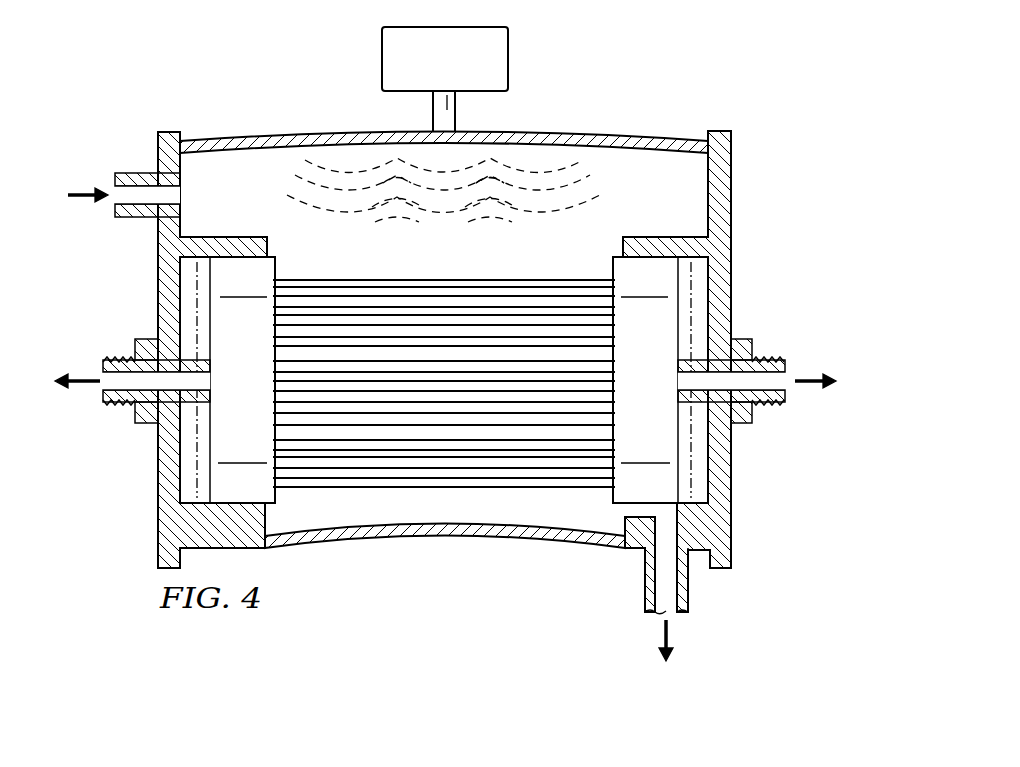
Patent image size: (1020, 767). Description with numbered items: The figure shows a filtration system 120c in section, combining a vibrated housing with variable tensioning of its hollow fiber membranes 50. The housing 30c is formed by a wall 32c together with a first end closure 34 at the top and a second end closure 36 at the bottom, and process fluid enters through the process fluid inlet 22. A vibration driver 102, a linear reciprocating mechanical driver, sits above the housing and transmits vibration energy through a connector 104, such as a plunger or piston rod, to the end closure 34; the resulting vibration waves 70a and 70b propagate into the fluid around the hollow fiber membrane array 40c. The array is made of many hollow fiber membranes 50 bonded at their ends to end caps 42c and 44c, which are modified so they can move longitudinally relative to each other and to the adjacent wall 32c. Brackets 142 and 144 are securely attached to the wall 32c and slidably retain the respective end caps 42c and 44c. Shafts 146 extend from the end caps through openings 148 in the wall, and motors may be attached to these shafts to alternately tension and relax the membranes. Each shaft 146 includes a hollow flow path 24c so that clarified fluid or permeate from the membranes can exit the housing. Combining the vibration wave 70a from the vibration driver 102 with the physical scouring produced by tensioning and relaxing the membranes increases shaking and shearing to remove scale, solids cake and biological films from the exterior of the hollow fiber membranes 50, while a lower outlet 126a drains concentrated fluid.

The filtration system 120c is at (438, 316).
The vibration driver 102 is at (382, 57).
The connector 104 is at (433, 116).
The first end closure 34 is at (298, 137).
The process fluid inlet 22 is at (150, 175).
The bracket 142 is at (230, 238).
The bracket 144 is at (660, 238).
The hollow fiber membrane array 40c is at (319, 271).
The vibration wave 70b is at (397, 224).
The vibration wave 70a is at (536, 224).
The wall 32c is at (734, 208).
The housing 30c is at (158, 487).
The opening 148 is at (208, 357).
The shaft 146 is at (208, 404).
The hollow flow path 24c is at (105, 388).
The end cap 42c is at (276, 497).
The end cap 44c is at (612, 496).
The hollow fiber membrane 50 is at (390, 442).
The second end closure 36 is at (454, 540).
The drain outlet 126a is at (690, 582).